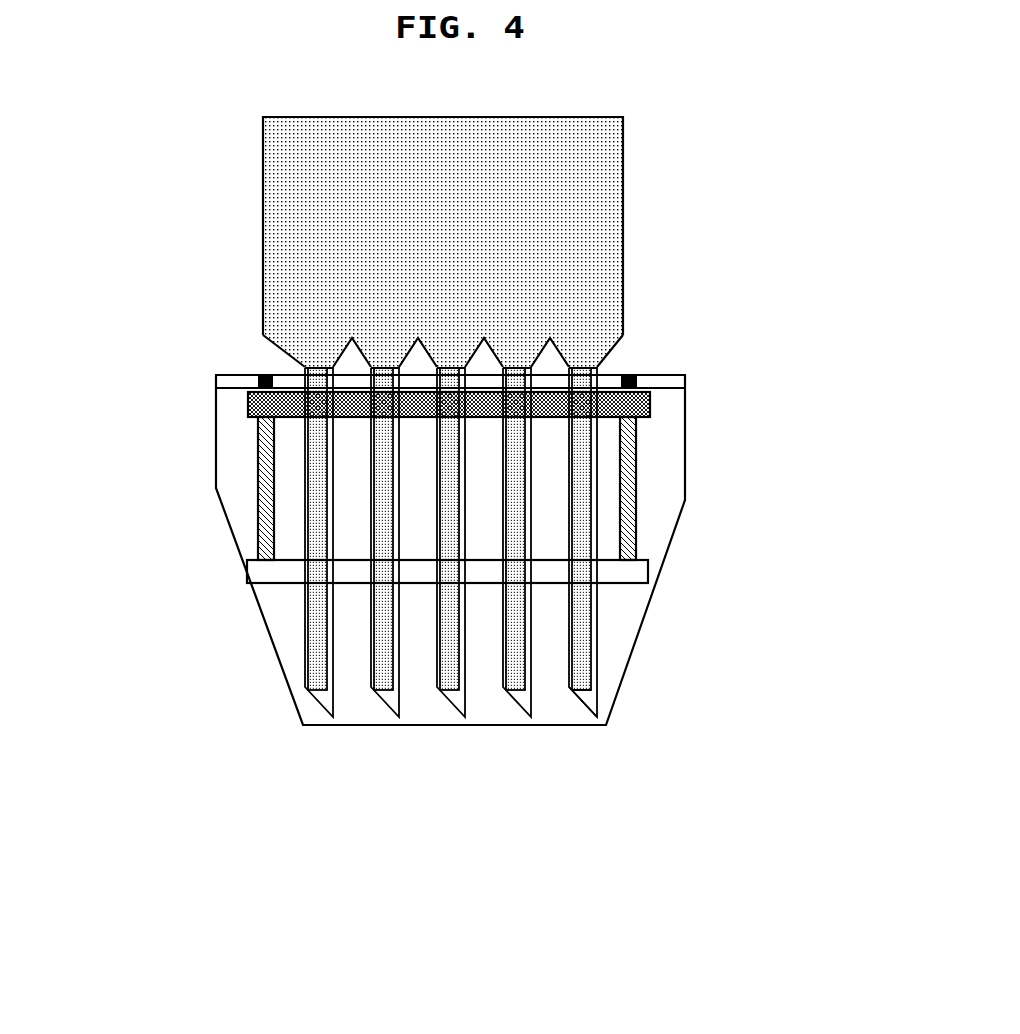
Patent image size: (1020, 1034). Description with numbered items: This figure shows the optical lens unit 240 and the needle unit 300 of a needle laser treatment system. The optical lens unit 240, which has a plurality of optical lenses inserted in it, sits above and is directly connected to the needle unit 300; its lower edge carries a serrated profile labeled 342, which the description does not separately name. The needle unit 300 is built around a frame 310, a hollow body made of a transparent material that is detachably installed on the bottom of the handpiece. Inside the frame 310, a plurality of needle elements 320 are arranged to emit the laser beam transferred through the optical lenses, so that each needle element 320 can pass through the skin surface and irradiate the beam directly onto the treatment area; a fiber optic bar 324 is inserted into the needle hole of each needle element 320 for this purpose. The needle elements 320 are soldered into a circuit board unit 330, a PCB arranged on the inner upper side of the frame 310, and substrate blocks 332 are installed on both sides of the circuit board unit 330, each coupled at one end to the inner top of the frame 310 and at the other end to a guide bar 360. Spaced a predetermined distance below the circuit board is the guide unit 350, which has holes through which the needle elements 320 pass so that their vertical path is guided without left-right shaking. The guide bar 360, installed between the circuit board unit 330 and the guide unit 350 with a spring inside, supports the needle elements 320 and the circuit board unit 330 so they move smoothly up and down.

The optical lens unit 240 is at (627, 182).
The needle unit 300 is at (680, 367).
The frame 310 is at (672, 455).
The needle element 320 is at (598, 660).
The fiber optic bar 324 is at (573, 692).
The circuit board unit 330 is at (650, 404).
The substrate block 332 is at (258, 385).
The serrated contact portion 342 is at (308, 347).
The guide unit 350 is at (640, 573).
The guide bar 360 is at (636, 505).